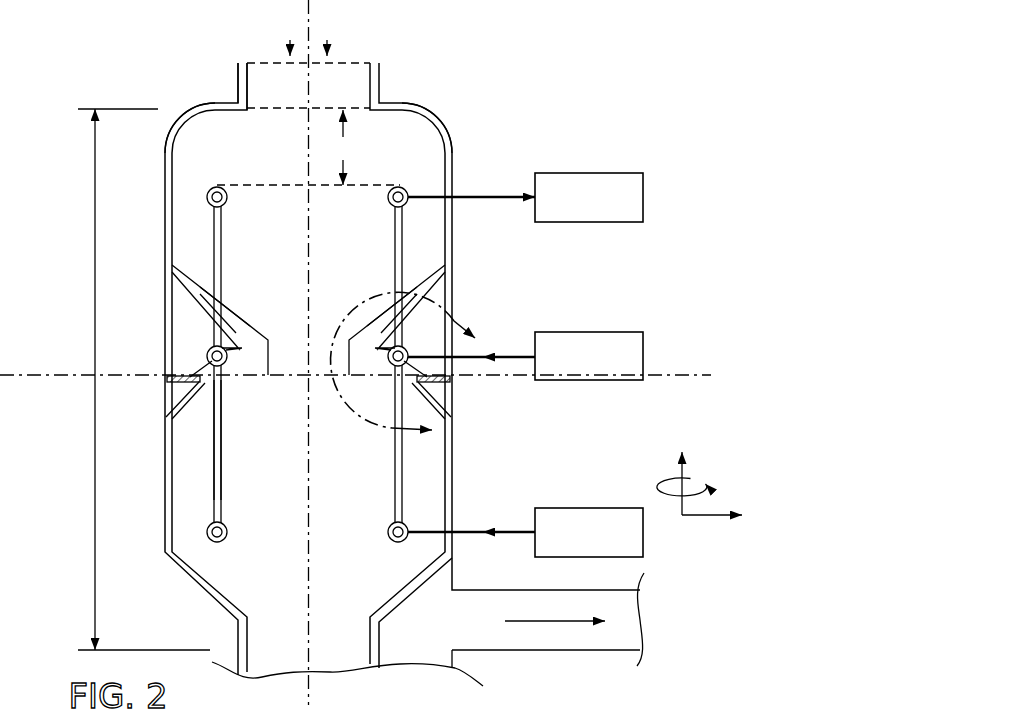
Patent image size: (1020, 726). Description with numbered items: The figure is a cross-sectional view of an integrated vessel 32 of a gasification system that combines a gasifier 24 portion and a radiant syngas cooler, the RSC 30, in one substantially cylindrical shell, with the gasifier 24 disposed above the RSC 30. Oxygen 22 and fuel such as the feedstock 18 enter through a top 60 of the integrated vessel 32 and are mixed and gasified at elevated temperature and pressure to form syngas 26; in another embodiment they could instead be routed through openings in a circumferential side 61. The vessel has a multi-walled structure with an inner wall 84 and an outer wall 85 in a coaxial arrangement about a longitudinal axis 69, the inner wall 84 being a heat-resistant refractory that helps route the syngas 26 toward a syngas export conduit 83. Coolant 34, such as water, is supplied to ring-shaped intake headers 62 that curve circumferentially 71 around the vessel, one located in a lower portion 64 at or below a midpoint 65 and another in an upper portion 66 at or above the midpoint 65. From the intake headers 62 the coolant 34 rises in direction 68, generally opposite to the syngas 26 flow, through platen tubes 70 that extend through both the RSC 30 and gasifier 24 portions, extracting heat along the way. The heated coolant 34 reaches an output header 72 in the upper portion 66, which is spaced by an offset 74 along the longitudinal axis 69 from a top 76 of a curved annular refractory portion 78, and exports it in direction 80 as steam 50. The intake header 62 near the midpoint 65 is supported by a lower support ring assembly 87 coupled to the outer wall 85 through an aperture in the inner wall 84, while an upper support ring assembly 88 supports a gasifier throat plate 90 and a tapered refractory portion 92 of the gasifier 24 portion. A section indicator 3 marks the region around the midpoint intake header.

The section view indicator 3 is at (412, 376).
The feedstock 18 is at (290, 40).
The oxygen 22 is at (327, 40).
The gasifier 24 is at (190, 167).
The syngas 26 is at (522, 621).
The RSC 30 is at (248, 500).
The integrated vessel 32 is at (481, 127).
The coolant 34 is at (589, 332).
The steam 50 is at (589, 173).
The top 60 is at (345, 63).
The circumferential side 61 is at (237, 78).
The intake headers 62 is at (207, 348).
The lower portion 64 is at (95, 513).
The midpoint 65 is at (68, 372).
The upper portion 66 is at (95, 258).
The direction 68 is at (682, 470).
The longitudinal axis 69 is at (305, 152).
The platen tubes 70 is at (225, 242).
The circumferential direction 71 is at (660, 488).
The output header 72 is at (212, 187).
The offset 74 is at (308, 147).
The top 76 is at (322, 107).
The curved annular refractory portion 78 is at (450, 115).
The direction 80 is at (726, 518).
The syngas export conduit 83 is at (613, 637).
The inner wall 84 is at (172, 213).
The outer wall 85 is at (190, 112).
The lower support ring assembly 87 is at (190, 402).
The upper support ring assembly 88 is at (252, 318).
The gasifier throat plate 90 is at (188, 298).
The tapered refractory portion 92 is at (238, 318).